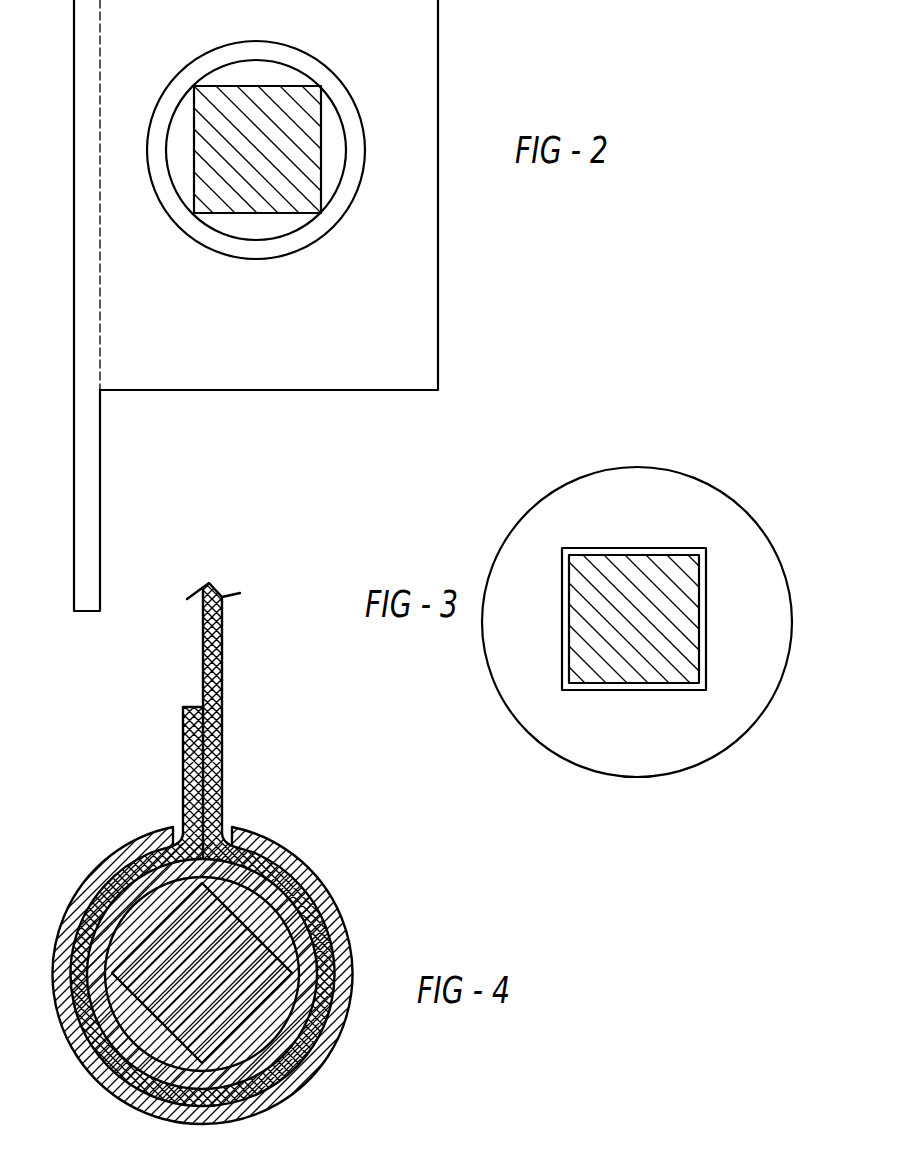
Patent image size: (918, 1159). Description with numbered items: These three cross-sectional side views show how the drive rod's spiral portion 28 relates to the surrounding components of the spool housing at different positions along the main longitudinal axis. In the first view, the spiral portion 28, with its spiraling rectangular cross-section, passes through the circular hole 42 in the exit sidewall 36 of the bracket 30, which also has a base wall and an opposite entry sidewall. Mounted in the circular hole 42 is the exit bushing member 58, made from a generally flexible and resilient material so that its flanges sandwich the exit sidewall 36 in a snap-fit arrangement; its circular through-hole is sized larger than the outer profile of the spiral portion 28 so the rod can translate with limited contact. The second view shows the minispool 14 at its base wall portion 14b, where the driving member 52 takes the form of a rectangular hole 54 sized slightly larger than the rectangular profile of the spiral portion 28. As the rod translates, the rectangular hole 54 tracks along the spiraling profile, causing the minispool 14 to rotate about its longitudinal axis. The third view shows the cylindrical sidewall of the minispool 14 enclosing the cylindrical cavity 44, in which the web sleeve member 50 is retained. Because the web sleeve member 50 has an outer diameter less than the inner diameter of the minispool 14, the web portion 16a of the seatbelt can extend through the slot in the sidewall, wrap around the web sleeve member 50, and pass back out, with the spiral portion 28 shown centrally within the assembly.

In FIG. 3, the minispool 14 is at (583, 472).
In FIG. 4, the minispool 14 is at (288, 857).
In FIG. 3, the base wall portion 14b is at (622, 492).
In FIG. 4, the web portion 16a is at (222, 668).
In FIG. 2, the spiral portion 28 is at (293, 180).
In FIG. 3, the spiral portion 28 is at (687, 648).
In FIG. 4, the spiral portion 28 is at (213, 1022).
In FIG. 2, the bracket 30 is at (73, 92).
In FIG. 2, the exit sidewall 36 is at (372, 293).
In FIG. 2, the circular hole 42 is at (363, 142).
In FIG. 4, the cylindrical cavity 44 is at (265, 920).
In FIG. 4, the web sleeve member 50 is at (307, 947).
In FIG. 3, the driving member 52 is at (650, 547).
In FIG. 3, the rectangular hole 54 is at (683, 547).
In FIG. 2, the exit bushing member 58 is at (343, 103).